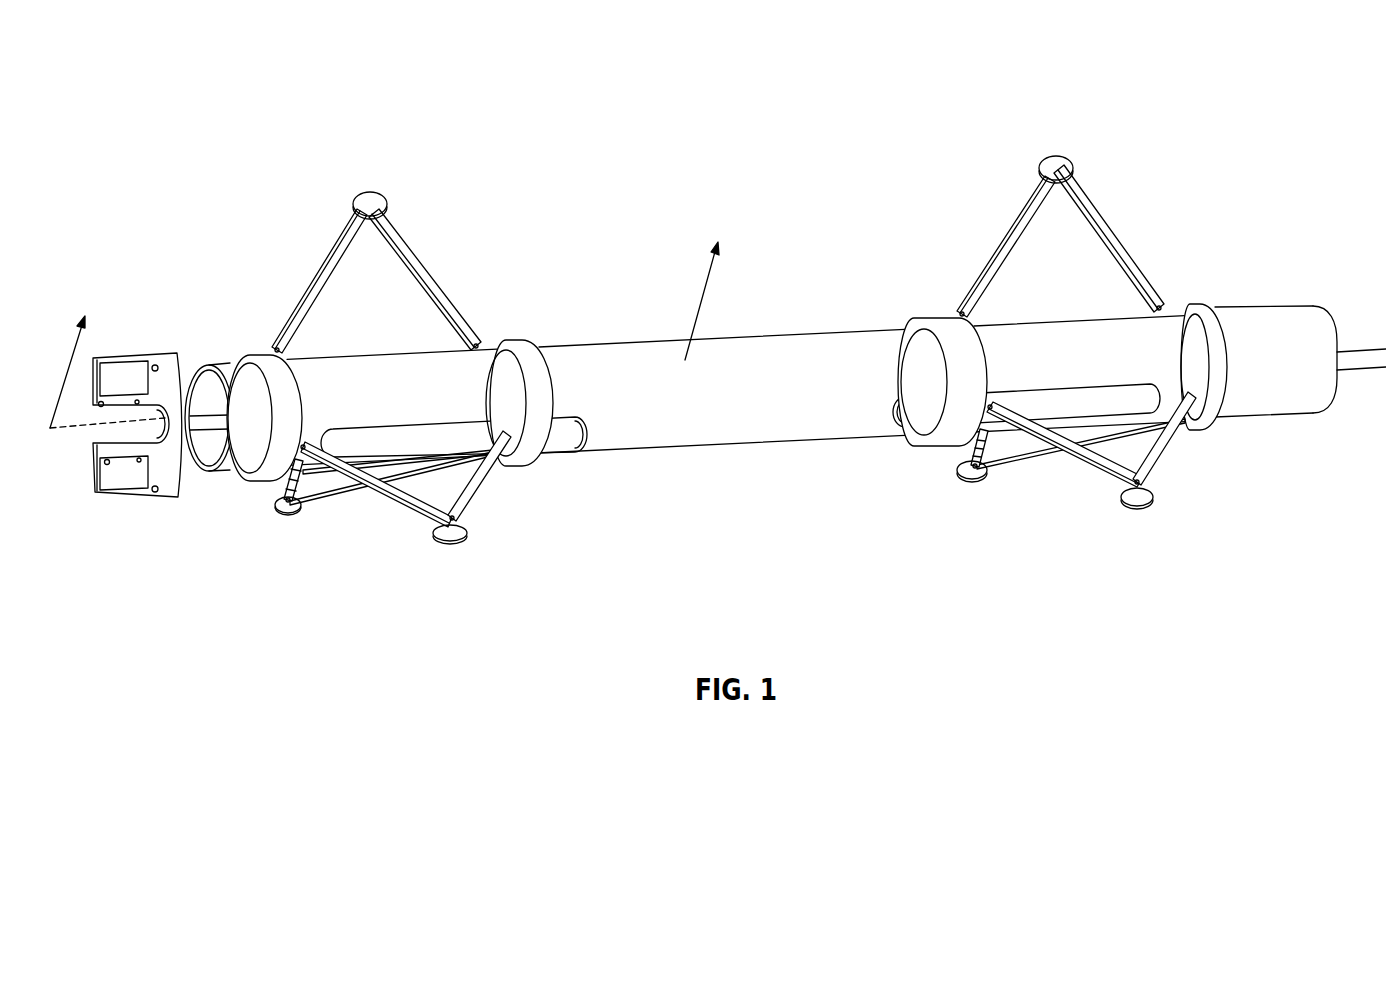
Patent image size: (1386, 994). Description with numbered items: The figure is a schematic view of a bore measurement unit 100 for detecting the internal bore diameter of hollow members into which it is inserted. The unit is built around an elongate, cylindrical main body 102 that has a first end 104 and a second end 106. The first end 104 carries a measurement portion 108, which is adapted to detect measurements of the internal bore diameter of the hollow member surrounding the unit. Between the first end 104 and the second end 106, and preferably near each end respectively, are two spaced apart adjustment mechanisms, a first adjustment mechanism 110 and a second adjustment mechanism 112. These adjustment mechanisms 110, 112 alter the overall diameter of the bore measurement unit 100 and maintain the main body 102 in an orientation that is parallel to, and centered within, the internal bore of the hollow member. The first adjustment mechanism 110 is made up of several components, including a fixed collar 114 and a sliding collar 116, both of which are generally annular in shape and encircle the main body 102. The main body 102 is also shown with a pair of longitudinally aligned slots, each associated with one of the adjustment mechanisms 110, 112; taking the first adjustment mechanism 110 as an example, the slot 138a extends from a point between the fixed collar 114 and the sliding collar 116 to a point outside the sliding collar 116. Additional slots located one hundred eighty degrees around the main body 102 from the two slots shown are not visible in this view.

The bore measurement unit 100 is at (356, 71).
The main body 102 is at (745, 433).
The first end 104 is at (242, 460).
The second end 106 is at (1262, 318).
The measurement portion 108 is at (168, 352).
The first adjustment mechanism 110 is at (403, 238).
The second adjustment mechanism 112 is at (1097, 208).
The fixed collar 114 is at (260, 360).
The sliding collar 116 is at (518, 347).
The slot 138a is at (427, 437).